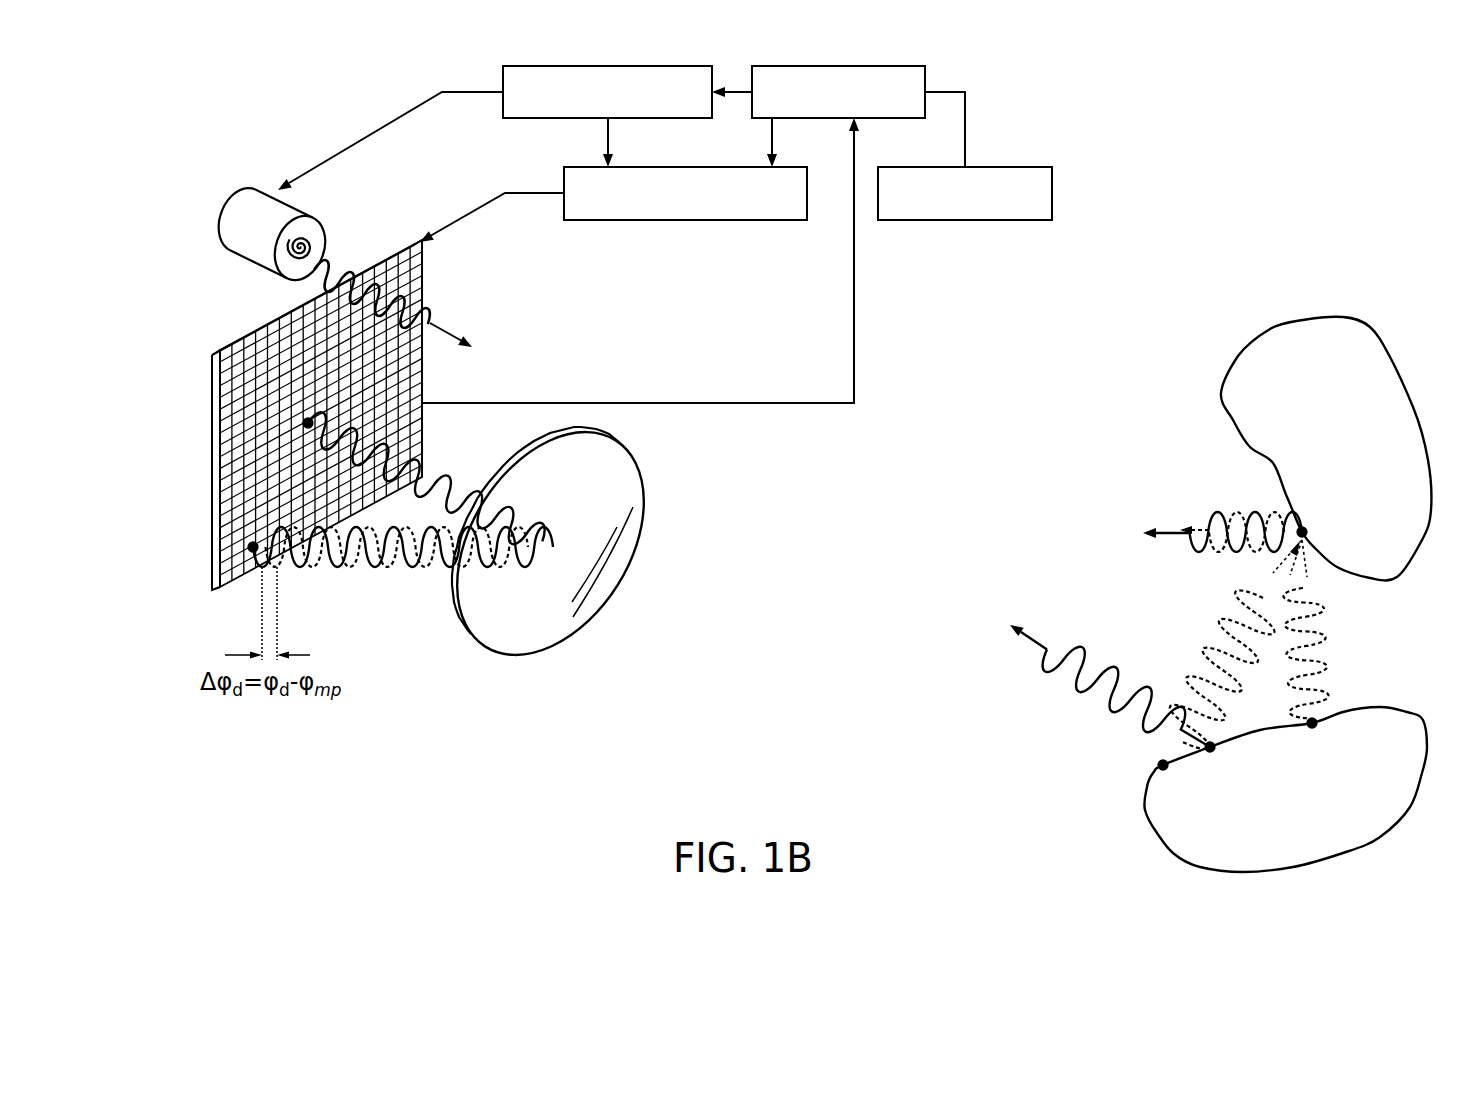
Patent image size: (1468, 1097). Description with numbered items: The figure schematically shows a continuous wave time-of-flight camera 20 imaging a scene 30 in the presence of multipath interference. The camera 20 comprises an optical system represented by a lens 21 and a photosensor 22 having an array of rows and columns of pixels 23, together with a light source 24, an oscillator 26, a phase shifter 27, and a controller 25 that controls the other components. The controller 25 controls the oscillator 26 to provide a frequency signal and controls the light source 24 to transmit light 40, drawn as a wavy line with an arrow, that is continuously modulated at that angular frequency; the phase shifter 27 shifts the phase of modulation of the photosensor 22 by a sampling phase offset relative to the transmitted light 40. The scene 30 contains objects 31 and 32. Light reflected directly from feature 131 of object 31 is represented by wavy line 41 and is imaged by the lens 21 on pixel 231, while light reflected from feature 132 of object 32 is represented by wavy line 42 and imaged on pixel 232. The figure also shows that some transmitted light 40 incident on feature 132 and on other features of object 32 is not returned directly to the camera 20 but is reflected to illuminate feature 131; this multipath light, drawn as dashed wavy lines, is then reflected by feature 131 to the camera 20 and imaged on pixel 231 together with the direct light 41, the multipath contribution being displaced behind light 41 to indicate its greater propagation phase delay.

The CW-TOF camera 20 is at (148, 156).
The lens 21 is at (547, 646).
The photosensor 22 is at (148, 493).
The pixels 23 is at (257, 403).
The pixel 231 is at (250, 550).
The pixel 232 is at (303, 422).
The light source 24 is at (255, 187).
The controller 25 is at (793, 66).
The oscillator 26 is at (606, 66).
The phase shifter 27 is at (560, 175).
The scene 30 is at (1339, 270).
The object 31 is at (1334, 450).
The object 32 is at (1374, 755).
The transmitted light 40 is at (430, 323).
The reflected light 41 is at (382, 568).
The reflected light 42 is at (450, 480).
The feature 131 is at (1308, 531).
The feature 132 is at (1210, 750).